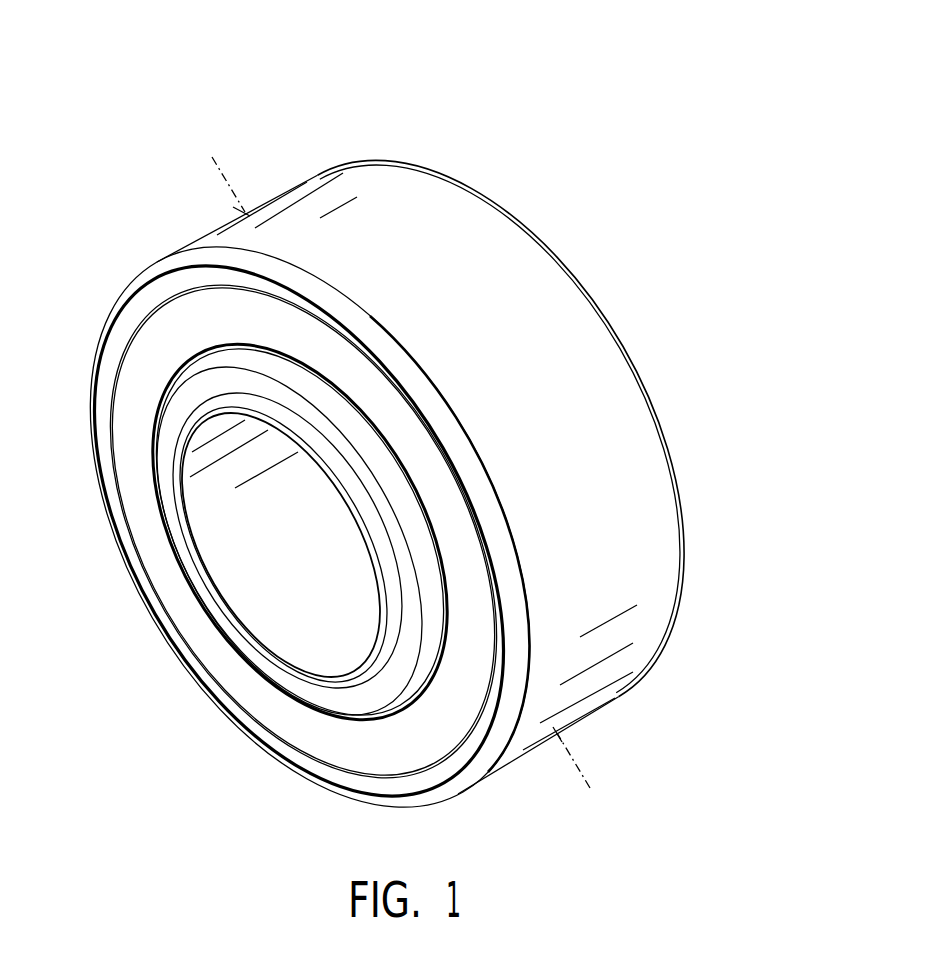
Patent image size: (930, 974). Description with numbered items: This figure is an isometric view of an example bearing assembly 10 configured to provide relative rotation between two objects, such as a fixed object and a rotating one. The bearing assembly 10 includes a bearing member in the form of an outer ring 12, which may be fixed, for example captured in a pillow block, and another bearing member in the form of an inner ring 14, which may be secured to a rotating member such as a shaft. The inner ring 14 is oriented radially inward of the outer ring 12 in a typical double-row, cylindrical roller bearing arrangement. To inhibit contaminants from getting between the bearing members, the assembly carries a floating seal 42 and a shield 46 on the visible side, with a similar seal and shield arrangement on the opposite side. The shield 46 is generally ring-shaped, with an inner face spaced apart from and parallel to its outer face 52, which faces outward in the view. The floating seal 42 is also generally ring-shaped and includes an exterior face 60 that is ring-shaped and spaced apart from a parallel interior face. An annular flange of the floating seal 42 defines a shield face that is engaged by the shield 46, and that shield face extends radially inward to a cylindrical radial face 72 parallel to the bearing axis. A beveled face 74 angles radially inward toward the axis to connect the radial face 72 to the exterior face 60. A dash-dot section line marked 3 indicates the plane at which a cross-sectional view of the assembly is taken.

The bearing assembly 10 is at (342, 442).
The outer ring 12 is at (114, 293).
The inner ring 14 is at (217, 617).
The floating seal 42 is at (249, 664).
The shield 46 is at (342, 738).
The outer face 52 is at (191, 341).
The exterior face 60 is at (380, 690).
The radial face 72 is at (312, 372).
The beveled face 74 is at (343, 418).
The section line of FIG. 3 is at (212, 157).